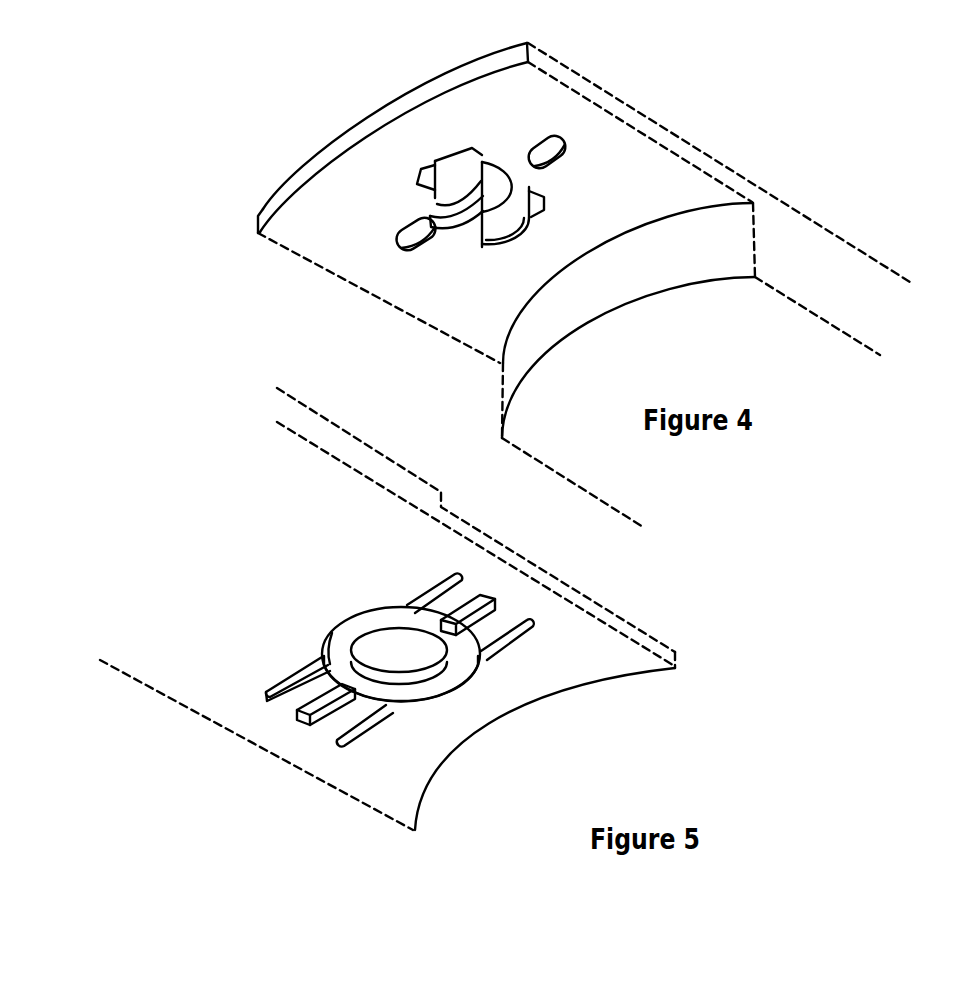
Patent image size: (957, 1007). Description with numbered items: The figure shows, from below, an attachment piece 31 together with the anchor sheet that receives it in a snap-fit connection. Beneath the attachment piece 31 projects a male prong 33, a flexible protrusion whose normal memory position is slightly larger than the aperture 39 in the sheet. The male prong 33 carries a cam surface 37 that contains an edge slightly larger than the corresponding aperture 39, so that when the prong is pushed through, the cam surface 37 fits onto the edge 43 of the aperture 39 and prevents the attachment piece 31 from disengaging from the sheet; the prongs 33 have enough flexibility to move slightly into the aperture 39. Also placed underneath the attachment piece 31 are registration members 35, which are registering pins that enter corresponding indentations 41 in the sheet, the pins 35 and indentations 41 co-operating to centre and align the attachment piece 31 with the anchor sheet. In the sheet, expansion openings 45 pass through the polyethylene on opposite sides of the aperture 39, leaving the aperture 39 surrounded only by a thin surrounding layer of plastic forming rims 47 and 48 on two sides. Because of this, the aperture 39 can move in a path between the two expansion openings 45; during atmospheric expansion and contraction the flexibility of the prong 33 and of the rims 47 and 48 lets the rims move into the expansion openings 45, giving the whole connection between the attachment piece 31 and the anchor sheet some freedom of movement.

In FIG. 4, the attachment piece 31 is at (620, 107).
In FIG. 4, the male prong 33 is at (453, 167).
In FIG. 4, the registration member 35 is at (533, 148).
In FIG. 4, the cam surface 37 is at (432, 207).
In FIG. 5, the aperture 39 is at (403, 683).
In FIG. 5, the indentation 41 is at (328, 713).
In FIG. 5, the edge 43 is at (347, 640).
In FIG. 5, the expansion opening 45 is at (280, 688).
In FIG. 5, the rim 47 is at (453, 682).
In FIG. 5, the rim 48 is at (330, 648).